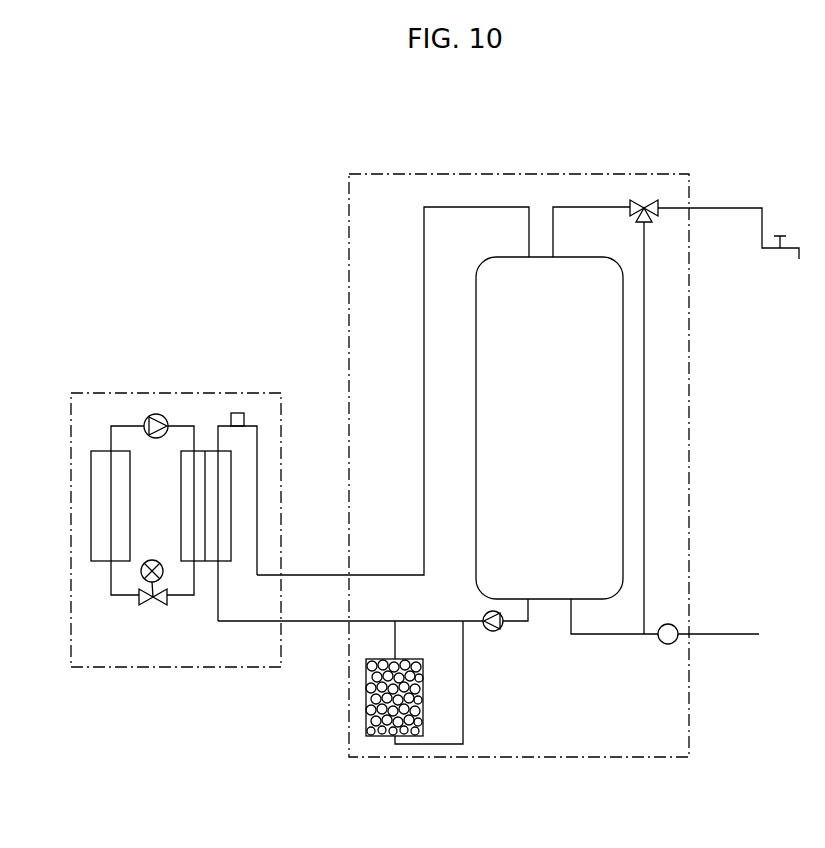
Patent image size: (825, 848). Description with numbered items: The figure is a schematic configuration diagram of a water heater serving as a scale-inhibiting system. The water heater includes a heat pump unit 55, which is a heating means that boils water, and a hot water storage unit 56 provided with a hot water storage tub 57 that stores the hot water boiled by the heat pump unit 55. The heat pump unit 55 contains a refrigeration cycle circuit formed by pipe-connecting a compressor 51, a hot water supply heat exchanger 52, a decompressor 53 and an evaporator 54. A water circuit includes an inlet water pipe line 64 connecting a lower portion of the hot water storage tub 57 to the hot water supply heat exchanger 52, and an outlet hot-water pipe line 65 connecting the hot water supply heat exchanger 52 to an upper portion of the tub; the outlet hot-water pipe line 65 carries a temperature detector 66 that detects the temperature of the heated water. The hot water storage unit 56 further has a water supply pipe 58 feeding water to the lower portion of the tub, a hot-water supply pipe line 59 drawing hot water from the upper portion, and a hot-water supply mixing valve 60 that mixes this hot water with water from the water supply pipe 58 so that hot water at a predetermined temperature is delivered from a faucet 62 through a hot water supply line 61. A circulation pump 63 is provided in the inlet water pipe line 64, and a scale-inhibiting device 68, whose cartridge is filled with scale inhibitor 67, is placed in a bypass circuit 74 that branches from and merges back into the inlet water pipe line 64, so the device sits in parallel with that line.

The compressor 51 is at (148, 418).
The hot water supply heat exchanger 52 is at (212, 562).
The decompressor 53 is at (153, 606).
The evaporator 54 is at (104, 562).
The heat pump unit 55 is at (163, 391).
The hot water storage unit 56 is at (348, 278).
The hot water storage tub 57 is at (548, 600).
The water supply pipe 58 is at (727, 634).
The hot-water supply pipe line 59 is at (582, 207).
The hot-water supply mixing valve 60 is at (652, 216).
The hot water supply line 61 is at (746, 207).
The faucet 62 is at (787, 255).
The circulation pump 63 is at (500, 631).
The inlet water pipe line 64 is at (298, 622).
The outlet hot-water pipe line 65 is at (330, 575).
The temperature detector 66 is at (238, 412).
The scale inhibitor 67 is at (366, 718).
The scale-inhibiting device 68 is at (366, 667).
The bypass circuit 74 is at (464, 677).